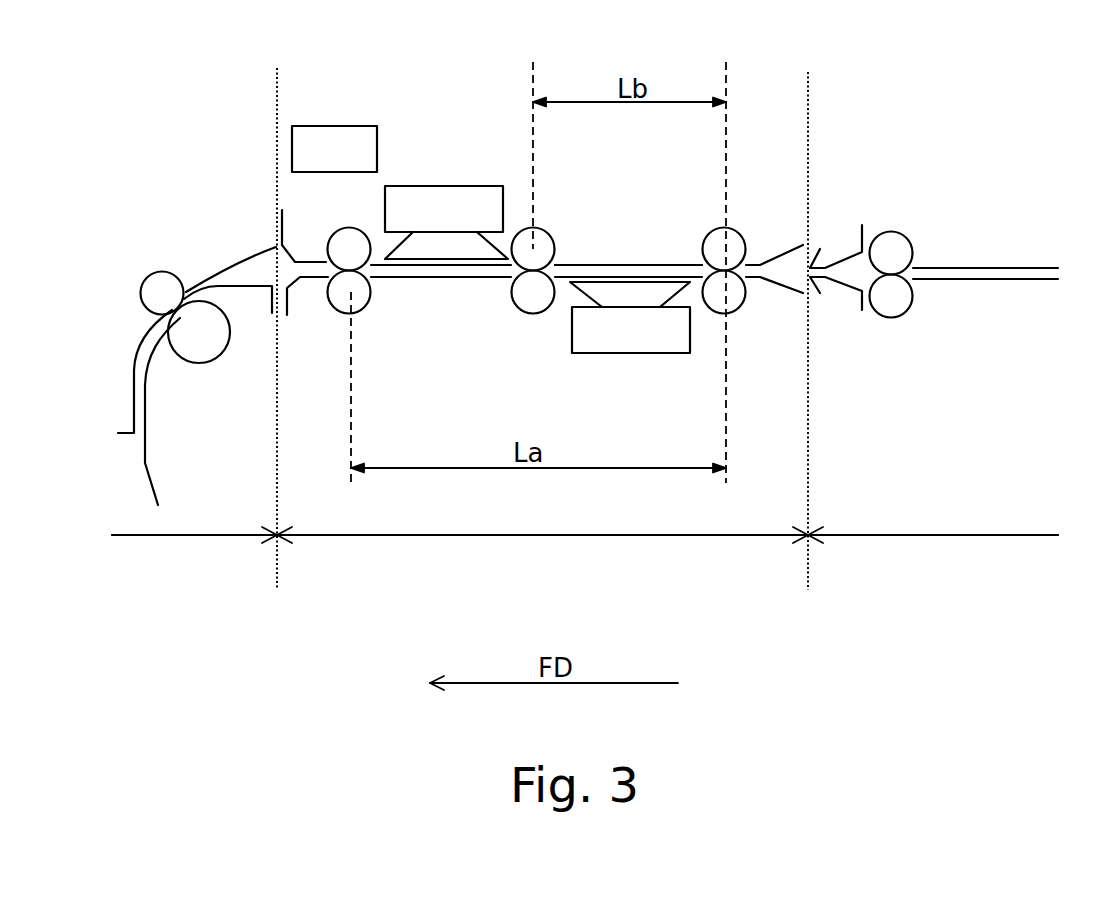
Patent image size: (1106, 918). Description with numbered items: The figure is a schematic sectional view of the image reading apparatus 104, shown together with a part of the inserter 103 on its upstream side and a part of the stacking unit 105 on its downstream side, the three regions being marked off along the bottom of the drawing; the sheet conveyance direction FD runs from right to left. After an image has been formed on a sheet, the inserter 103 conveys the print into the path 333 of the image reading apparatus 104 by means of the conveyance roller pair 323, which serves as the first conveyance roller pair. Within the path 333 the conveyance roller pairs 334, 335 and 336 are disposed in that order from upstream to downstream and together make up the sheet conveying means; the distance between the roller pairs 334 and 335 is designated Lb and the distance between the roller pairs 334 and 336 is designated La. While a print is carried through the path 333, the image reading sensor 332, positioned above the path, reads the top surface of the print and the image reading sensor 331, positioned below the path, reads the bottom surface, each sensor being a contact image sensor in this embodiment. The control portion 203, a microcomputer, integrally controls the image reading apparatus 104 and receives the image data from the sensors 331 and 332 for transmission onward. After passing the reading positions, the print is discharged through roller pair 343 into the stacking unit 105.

The control portion 203 is at (338, 125).
The conveyance roller pair 323 is at (912, 308).
The image reading sensor 331 is at (665, 355).
The image reading sensor 332 is at (415, 186).
The path 333 is at (590, 263).
The conveyance roller pair 334 is at (743, 303).
The conveyance roller pair 335 is at (515, 304).
The conveyance roller pair 336 is at (368, 298).
The discharge roller pair 343 is at (152, 273).
The inserter 103 is at (933, 519).
The image reading apparatus 104 is at (542, 519).
The stacking unit 105 is at (194, 519).